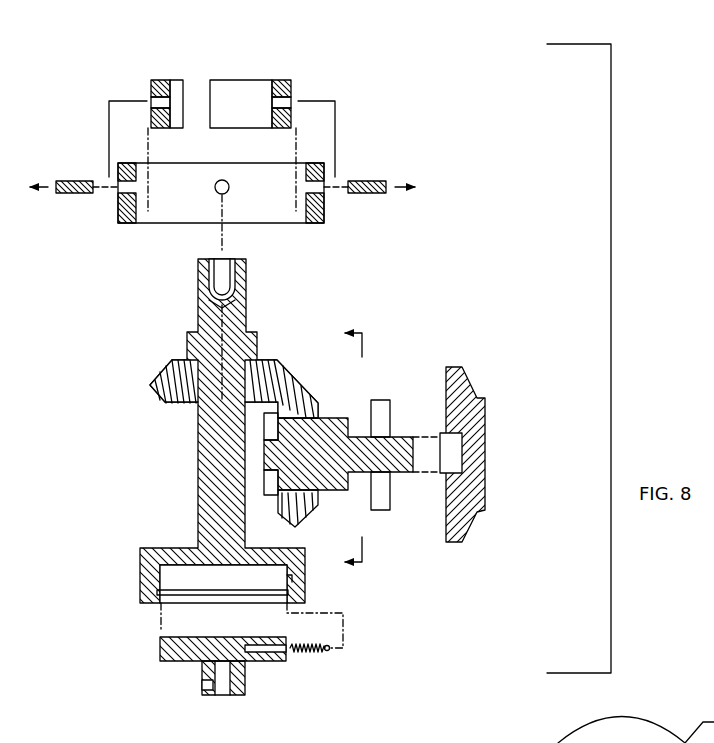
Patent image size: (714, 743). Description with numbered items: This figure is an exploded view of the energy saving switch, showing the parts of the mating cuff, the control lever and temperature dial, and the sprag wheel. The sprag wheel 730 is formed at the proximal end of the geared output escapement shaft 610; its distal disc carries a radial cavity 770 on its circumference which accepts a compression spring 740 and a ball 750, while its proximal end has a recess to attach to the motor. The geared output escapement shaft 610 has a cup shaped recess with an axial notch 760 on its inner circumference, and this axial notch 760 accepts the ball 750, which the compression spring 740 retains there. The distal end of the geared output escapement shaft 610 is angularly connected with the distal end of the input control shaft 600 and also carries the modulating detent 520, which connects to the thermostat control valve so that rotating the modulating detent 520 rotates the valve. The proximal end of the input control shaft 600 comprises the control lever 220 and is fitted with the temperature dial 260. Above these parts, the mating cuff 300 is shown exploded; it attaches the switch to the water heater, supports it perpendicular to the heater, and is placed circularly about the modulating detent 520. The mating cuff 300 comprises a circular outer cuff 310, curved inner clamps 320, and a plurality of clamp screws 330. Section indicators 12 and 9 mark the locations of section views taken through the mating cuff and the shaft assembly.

The mating cuff 300 is at (438, 88).
The circular outer cuff 310 is at (315, 220).
The curved inner clamps 320 is at (283, 82).
The clamp screws 330 is at (80, 194).
The section view 12 is at (223, 139).
The section view 9 is at (362, 447).
The geared output escapement shaft 610 is at (244, 434).
The modulating detent 520 is at (240, 285).
The axial notch 760 is at (286, 577).
The input control shaft 600 is at (365, 476).
The control lever 220 is at (383, 508).
The temperature dial 260 is at (480, 408).
The sprag wheel 730 is at (252, 663).
The radial cavity 770 is at (260, 657).
The compression spring 740 is at (307, 652).
The ball 750 is at (328, 651).